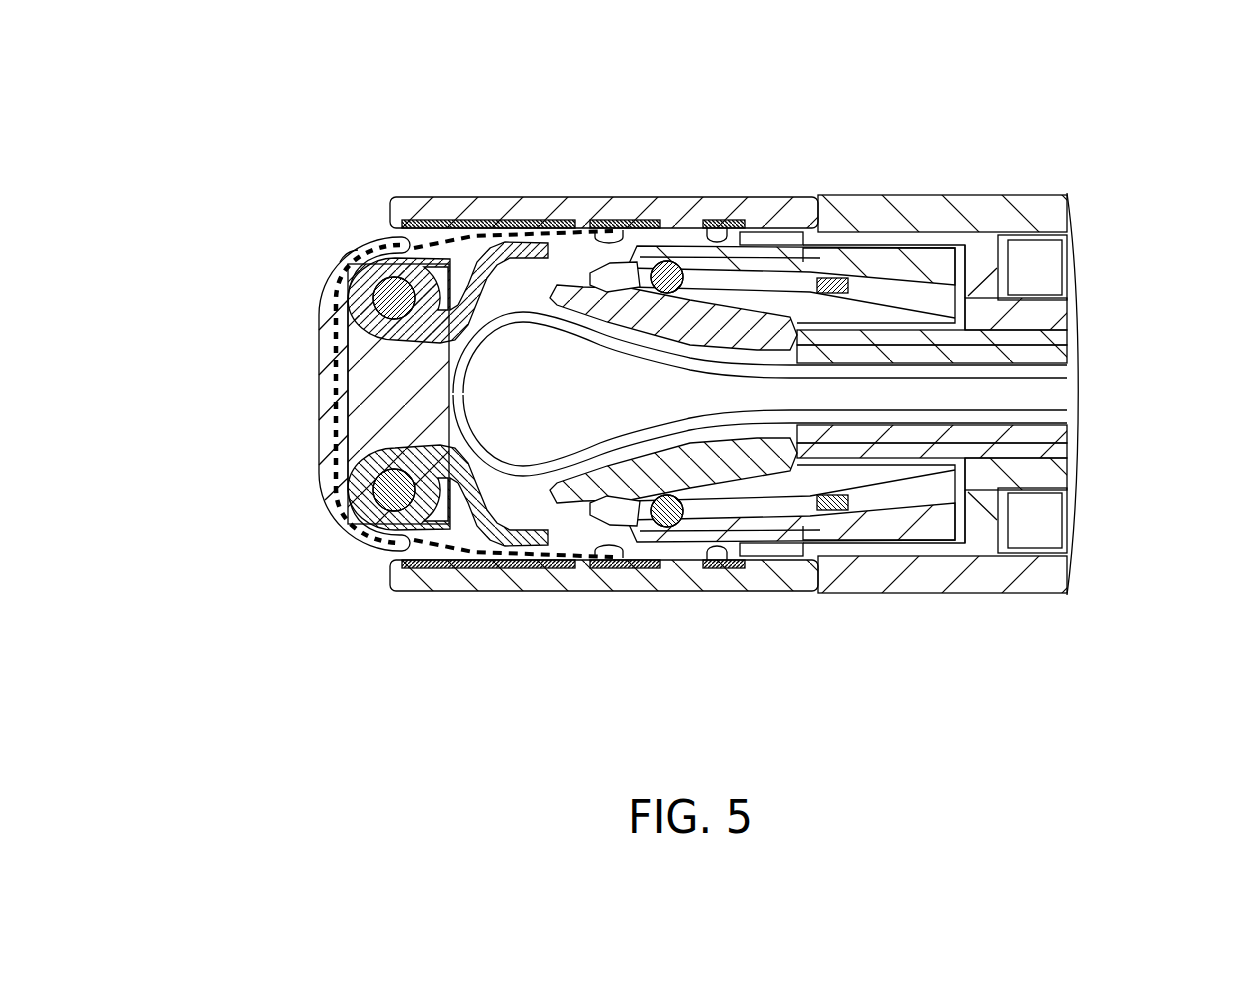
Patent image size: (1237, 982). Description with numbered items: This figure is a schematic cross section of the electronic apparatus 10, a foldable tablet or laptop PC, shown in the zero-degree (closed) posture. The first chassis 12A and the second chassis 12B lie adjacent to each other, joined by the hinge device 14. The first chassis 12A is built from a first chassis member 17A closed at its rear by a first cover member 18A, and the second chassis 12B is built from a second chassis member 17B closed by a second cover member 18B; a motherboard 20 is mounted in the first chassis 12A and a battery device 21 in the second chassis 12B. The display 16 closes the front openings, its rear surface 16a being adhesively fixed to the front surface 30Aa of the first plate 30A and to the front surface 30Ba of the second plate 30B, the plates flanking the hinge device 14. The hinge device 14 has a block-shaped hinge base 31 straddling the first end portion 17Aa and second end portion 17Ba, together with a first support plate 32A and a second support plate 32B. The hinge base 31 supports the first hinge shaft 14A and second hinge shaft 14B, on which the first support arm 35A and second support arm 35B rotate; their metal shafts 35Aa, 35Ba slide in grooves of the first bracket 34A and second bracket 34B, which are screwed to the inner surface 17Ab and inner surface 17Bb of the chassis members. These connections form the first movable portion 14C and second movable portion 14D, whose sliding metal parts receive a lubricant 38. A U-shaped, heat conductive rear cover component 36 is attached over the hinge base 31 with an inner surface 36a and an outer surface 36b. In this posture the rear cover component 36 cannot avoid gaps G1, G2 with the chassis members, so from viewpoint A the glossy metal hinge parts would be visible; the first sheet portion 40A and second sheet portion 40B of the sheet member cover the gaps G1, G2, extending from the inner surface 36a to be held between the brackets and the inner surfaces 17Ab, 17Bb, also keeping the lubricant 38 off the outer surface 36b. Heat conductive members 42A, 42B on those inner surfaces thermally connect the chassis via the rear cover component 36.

The electronic apparatus 10 is at (240, 59).
The first chassis 12A is at (891, 172).
The second chassis 12B is at (891, 616).
The hinge device 14 is at (287, 341).
The first hinge shaft 14A is at (385, 298).
The second hinge shaft 14B is at (385, 491).
The first movable portion 14C is at (532, 286).
The second movable portion 14D is at (532, 504).
The display 16 is at (604, 437).
The rear surface 16a is at (1075, 347).
The first chassis member 17A is at (518, 196).
The first end portion 17Aa is at (398, 235).
The inner surface 17Ab is at (745, 240).
The second chassis member 17B is at (518, 592).
The second end portion 17Ba is at (398, 553).
The inner surface 17Bb is at (745, 548).
The first cover member 18A is at (982, 215).
The second cover member 18B is at (982, 573).
The motherboard 20 is at (1045, 266).
The battery device 21 is at (1045, 524).
The first plate 30A is at (1058, 328).
The front surface 30Aa is at (1045, 367).
The second plate 30B is at (1058, 460).
The front surface 30Ba is at (1045, 425).
The hinge base 31 is at (380, 383).
The first support plate 32A is at (790, 262).
The second support plate 32B is at (790, 526).
The first bracket 34A is at (607, 230).
The second bracket 34B is at (607, 558).
The first support arm 35A is at (560, 290).
The metal shaft 35Aa is at (663, 262).
The second support arm 35B is at (560, 498).
The metal shaft 35Ba is at (663, 526).
The rear cover component 36 is at (319, 416).
The inner surface 36a is at (333, 455).
The outer surface 36b is at (342, 260).
The lubricant 38 is at (497, 218).
The first sheet portion 40A is at (412, 243).
The second sheet portion 40B is at (412, 545).
The heat conductive member 42A is at (460, 221).
The heat conductive member 42B is at (460, 568).
The viewpoint A is at (377, 231).
The gap G1 is at (395, 232).
The gap G2 is at (395, 556).